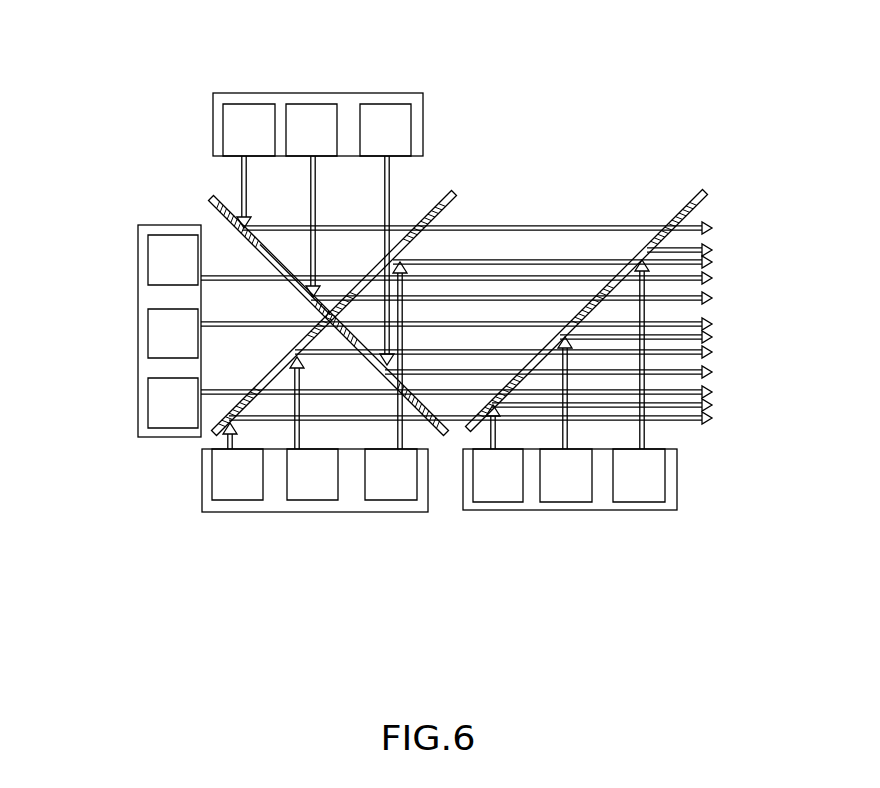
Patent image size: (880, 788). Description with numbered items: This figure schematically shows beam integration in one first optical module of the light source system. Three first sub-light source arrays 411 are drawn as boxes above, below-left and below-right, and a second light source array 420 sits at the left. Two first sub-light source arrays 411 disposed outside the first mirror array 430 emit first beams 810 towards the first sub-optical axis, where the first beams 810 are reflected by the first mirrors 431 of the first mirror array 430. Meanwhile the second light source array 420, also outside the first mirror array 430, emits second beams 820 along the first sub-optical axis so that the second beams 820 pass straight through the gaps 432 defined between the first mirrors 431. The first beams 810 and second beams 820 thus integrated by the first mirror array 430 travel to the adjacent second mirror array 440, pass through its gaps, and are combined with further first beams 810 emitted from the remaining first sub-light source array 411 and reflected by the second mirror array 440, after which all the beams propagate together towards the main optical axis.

The first sub-light source array 411 is at (305, 70).
The second light source array 420 is at (129, 336).
The first mirror array 430 is at (198, 195).
The first mirror 431 is at (230, 222).
The gap 432 is at (282, 271).
The second mirror array 440 is at (709, 184).
The first beam 810 is at (248, 202).
The second beam 820 is at (218, 281).